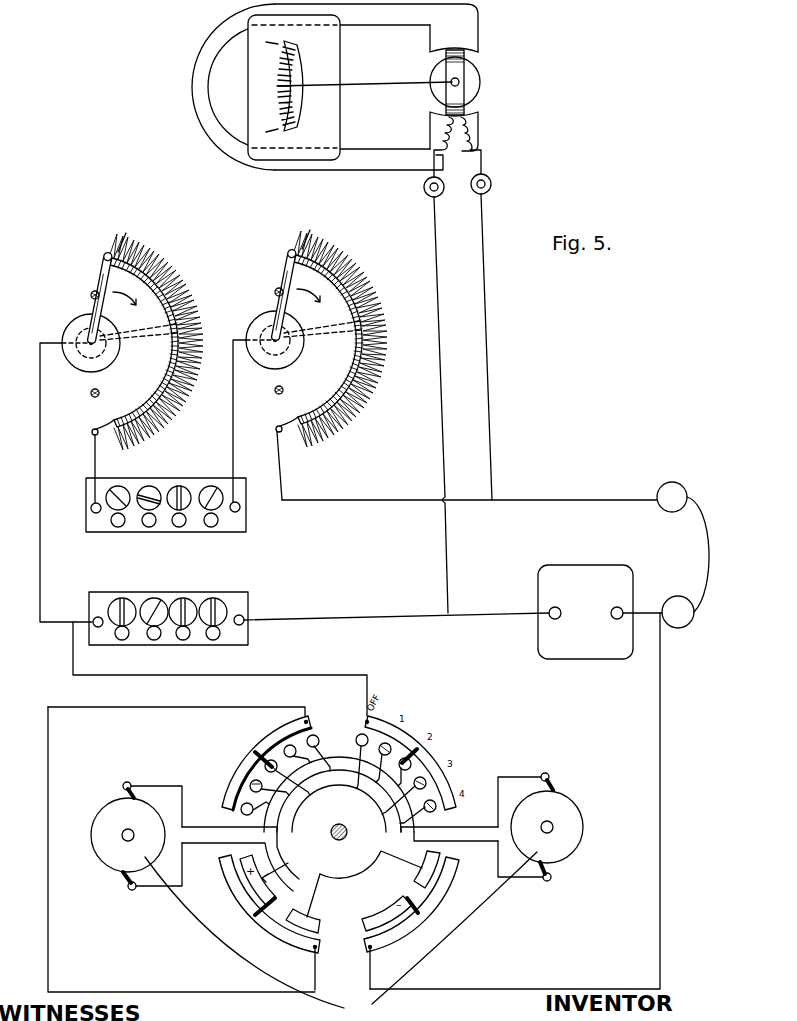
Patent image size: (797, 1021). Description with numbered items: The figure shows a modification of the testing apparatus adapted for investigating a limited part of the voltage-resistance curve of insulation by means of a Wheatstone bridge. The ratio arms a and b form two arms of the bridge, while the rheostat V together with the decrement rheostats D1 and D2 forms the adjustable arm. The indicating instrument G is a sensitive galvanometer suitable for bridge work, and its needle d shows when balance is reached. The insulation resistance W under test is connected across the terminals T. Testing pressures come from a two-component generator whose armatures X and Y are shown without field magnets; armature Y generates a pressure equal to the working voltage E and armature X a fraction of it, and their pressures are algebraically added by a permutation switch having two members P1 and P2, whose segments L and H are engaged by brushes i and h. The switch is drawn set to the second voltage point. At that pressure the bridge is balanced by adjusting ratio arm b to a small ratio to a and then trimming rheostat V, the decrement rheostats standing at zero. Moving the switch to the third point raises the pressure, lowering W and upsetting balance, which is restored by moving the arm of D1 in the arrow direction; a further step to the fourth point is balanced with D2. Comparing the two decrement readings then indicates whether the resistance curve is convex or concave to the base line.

The indicating instrument G is at (348, 100).
The galvanometer needle d is at (368, 73).
The decrement rheostat D1 is at (140, 343).
The decrement rheostat D2 is at (324, 340).
The rheostat V is at (172, 521).
The ratio arm b is at (143, 598).
The ratio arm a is at (585, 612).
The terminals T is at (675, 555).
The insulation resistance W is at (705, 554).
The permutation switch member P1 is at (339, 761).
The permutation switch member P2 is at (339, 922).
The contact segment L is at (270, 736).
The brush i is at (262, 769).
The contact segment H is at (232, 885).
The brush h is at (265, 916).
The armature Y is at (136, 836).
The armature X is at (540, 828).
The working voltage E is at (341, 934).